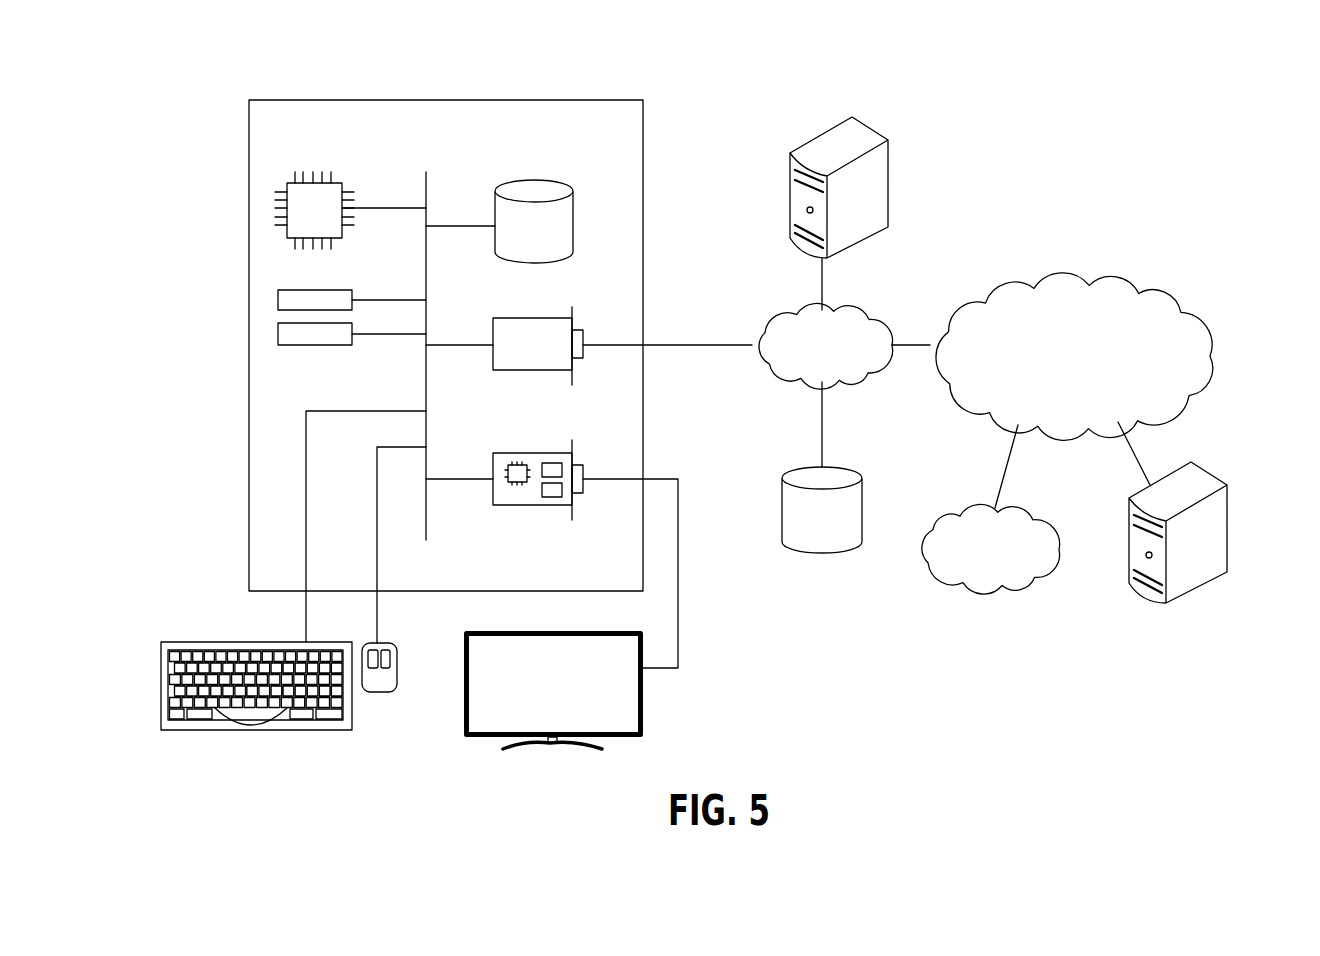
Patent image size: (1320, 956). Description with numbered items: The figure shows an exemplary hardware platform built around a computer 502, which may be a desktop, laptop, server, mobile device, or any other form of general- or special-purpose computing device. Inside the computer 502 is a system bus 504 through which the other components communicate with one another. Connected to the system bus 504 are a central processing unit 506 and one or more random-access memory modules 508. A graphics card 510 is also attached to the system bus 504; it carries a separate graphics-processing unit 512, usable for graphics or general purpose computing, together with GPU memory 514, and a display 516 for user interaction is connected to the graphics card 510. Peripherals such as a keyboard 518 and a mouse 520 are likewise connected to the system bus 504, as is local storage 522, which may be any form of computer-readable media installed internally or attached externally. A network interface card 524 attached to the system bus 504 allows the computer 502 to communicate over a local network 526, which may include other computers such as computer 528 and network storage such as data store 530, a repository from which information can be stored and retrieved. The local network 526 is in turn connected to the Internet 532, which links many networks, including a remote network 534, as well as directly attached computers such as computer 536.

The computer 502 is at (575, 100).
The system bus 504 is at (427, 187).
The central processing unit 506 is at (337, 180).
The random-access memory modules 508 is at (278, 333).
The graphics card 510 is at (493, 468).
The graphics-processing unit 512 is at (517, 480).
The GPU memory 514 is at (552, 495).
The display 516 is at (643, 712).
The keyboard 518 is at (245, 730).
The mouse 520 is at (378, 693).
The local storage 522 is at (575, 223).
The network interface card 524 is at (493, 328).
The local network 526 is at (875, 306).
The computer 528 is at (870, 123).
The data store 530 is at (842, 465).
The Internet 532 is at (1048, 272).
The remote network 534 is at (1047, 512).
The computer 536 is at (1207, 470).